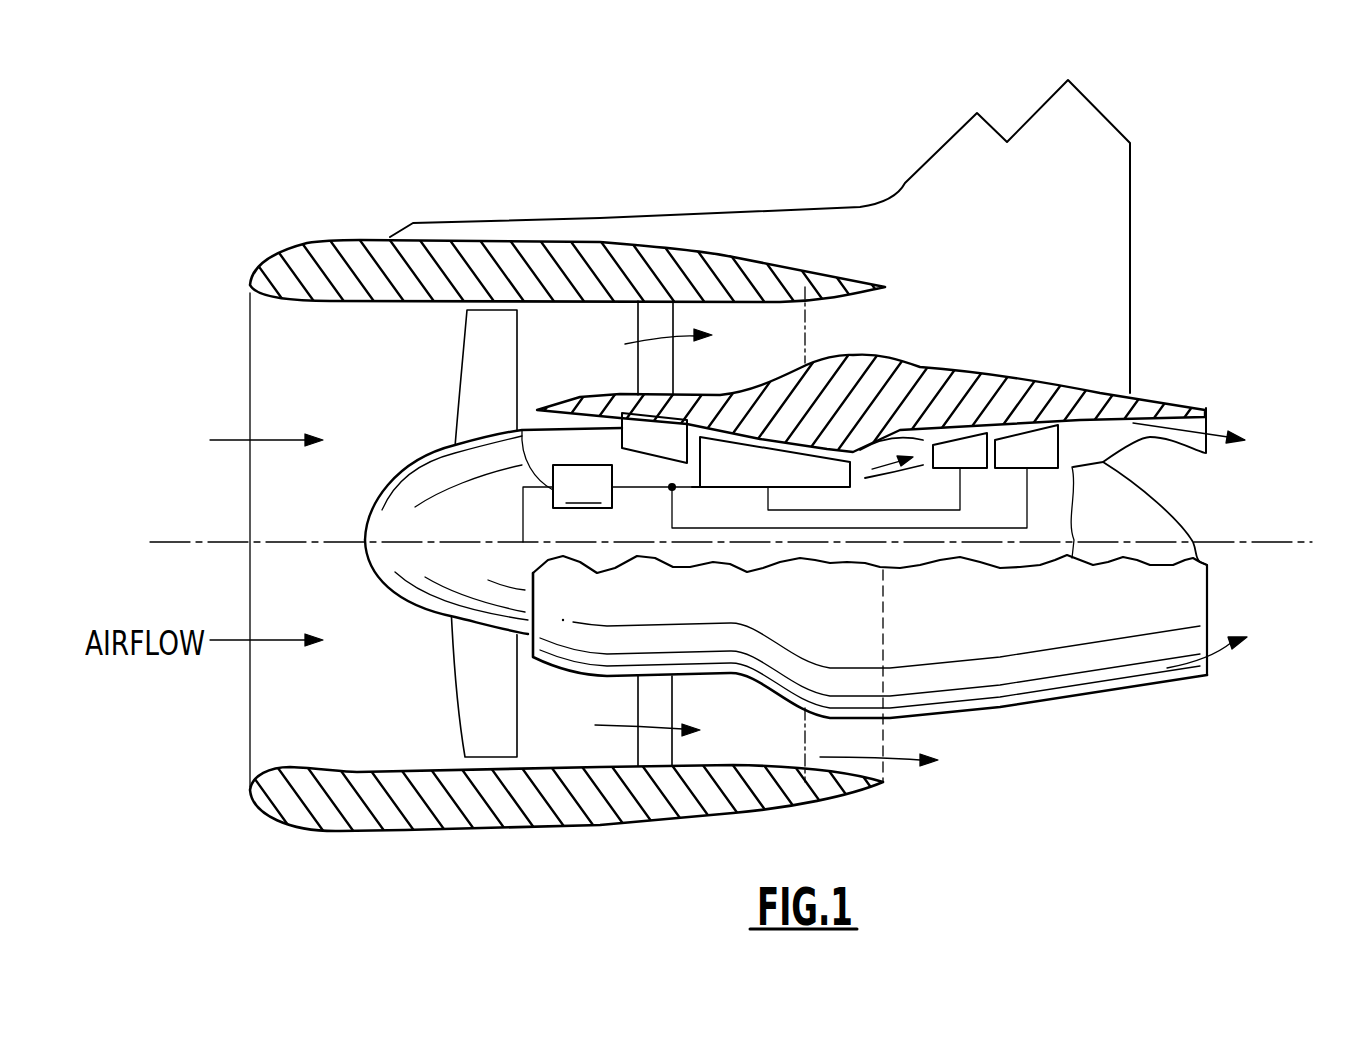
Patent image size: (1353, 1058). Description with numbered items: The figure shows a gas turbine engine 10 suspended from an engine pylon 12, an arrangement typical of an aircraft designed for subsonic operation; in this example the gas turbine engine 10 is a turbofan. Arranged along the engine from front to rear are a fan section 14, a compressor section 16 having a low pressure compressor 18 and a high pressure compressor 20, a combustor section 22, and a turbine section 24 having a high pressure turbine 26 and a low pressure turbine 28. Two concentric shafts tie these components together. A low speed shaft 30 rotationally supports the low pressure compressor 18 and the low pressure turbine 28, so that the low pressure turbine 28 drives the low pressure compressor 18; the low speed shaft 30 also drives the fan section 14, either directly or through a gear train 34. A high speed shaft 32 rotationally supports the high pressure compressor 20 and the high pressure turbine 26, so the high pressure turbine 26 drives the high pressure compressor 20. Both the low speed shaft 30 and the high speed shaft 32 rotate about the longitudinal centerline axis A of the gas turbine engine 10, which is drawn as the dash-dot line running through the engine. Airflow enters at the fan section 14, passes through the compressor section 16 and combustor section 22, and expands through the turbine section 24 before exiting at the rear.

The gas turbine engine 10 is at (288, 198).
The engine pylon 12 is at (1073, 145).
The fan section 14 is at (458, 710).
The compressor section 16 is at (607, 600).
The low pressure compressor 18 is at (653, 455).
The high pressure compressor 20 is at (752, 470).
The combustor section 22 is at (907, 480).
The turbine section 24 is at (958, 624).
The high pressure turbine 26 is at (977, 470).
The low pressure turbine 28 is at (1043, 470).
The low speed shaft 30 is at (797, 530).
The high speed shaft 32 is at (878, 511).
The gear train 34 is at (611, 503).
The longitudinal centerline axis A is at (1292, 543).